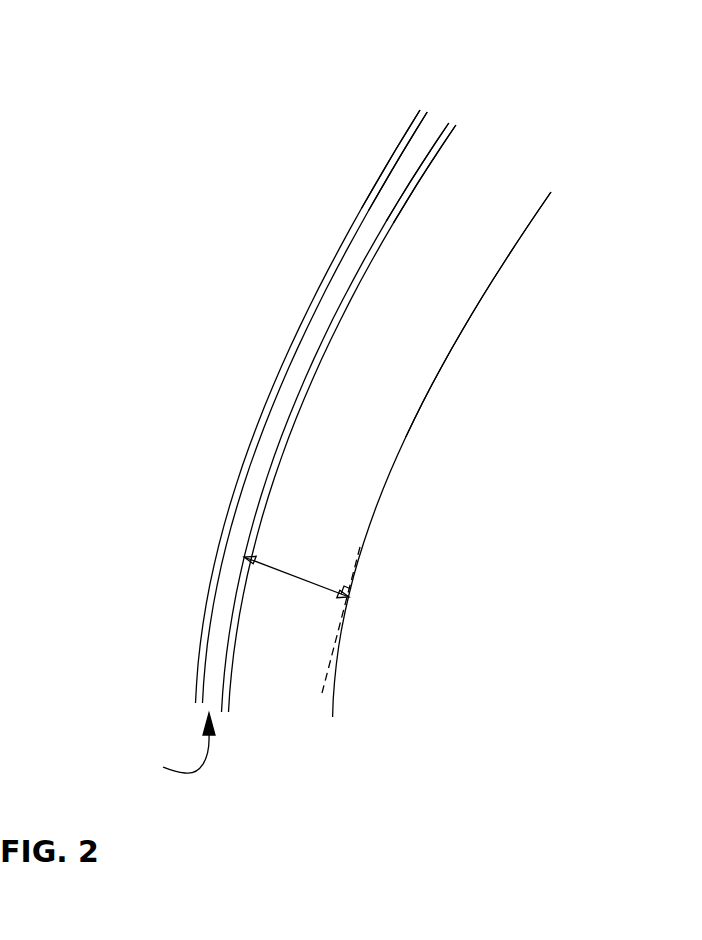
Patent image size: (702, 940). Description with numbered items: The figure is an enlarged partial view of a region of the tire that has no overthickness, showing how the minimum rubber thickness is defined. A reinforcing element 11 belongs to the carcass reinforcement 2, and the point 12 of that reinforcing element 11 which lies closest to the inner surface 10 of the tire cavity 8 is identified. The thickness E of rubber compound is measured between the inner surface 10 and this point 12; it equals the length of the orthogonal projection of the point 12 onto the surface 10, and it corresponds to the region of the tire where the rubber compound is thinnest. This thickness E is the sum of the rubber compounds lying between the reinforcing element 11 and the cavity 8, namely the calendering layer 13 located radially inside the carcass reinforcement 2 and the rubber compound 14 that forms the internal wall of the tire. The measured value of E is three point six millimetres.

The carcass reinforcement 2 is at (176, 743).
The tire cavity 8 is at (597, 384).
The inner surface 10 is at (393, 470).
The reinforcing element 11 is at (383, 198).
The point of the reinforcing element closest to the surface 12 is at (242, 558).
The calendering layer 13 is at (415, 130).
The rubber compound forming the internal wall 14 is at (507, 173).
The thickness of rubber compound E is at (310, 577).